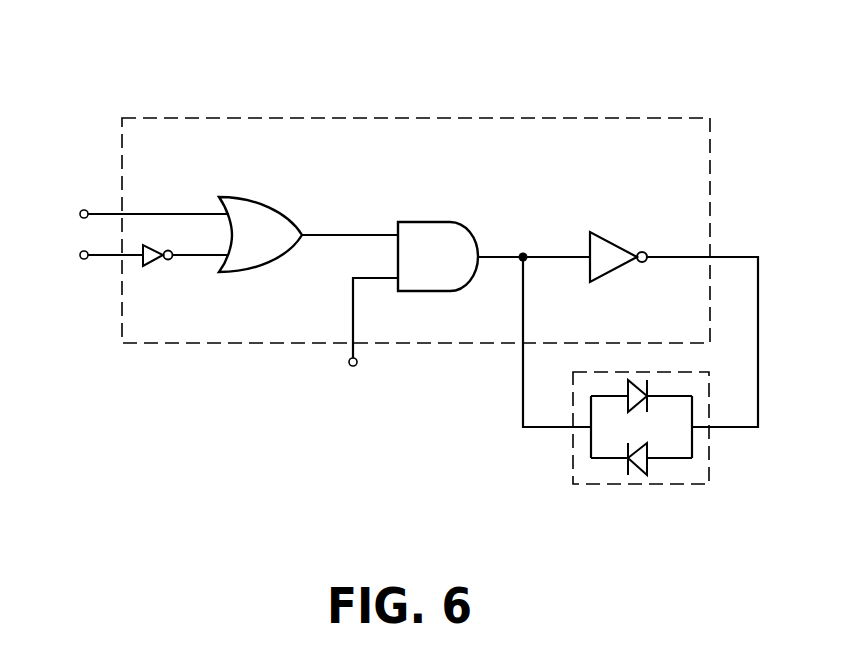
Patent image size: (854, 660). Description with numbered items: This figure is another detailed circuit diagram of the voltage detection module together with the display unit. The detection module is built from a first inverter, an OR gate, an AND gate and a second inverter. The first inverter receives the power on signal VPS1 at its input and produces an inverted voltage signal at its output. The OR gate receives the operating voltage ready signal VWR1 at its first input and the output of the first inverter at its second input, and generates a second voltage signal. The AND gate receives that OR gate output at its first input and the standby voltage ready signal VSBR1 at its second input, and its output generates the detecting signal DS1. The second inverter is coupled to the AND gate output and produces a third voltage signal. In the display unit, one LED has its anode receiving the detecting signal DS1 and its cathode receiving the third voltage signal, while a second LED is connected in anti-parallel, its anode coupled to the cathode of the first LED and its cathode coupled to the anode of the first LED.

The operating voltage ready signal VWR1 is at (122, 214).
The power on signal VPS1 is at (79, 254).
The standby voltage ready signal VSBR1 is at (361, 340).
The detecting signal DS1 is at (548, 257).